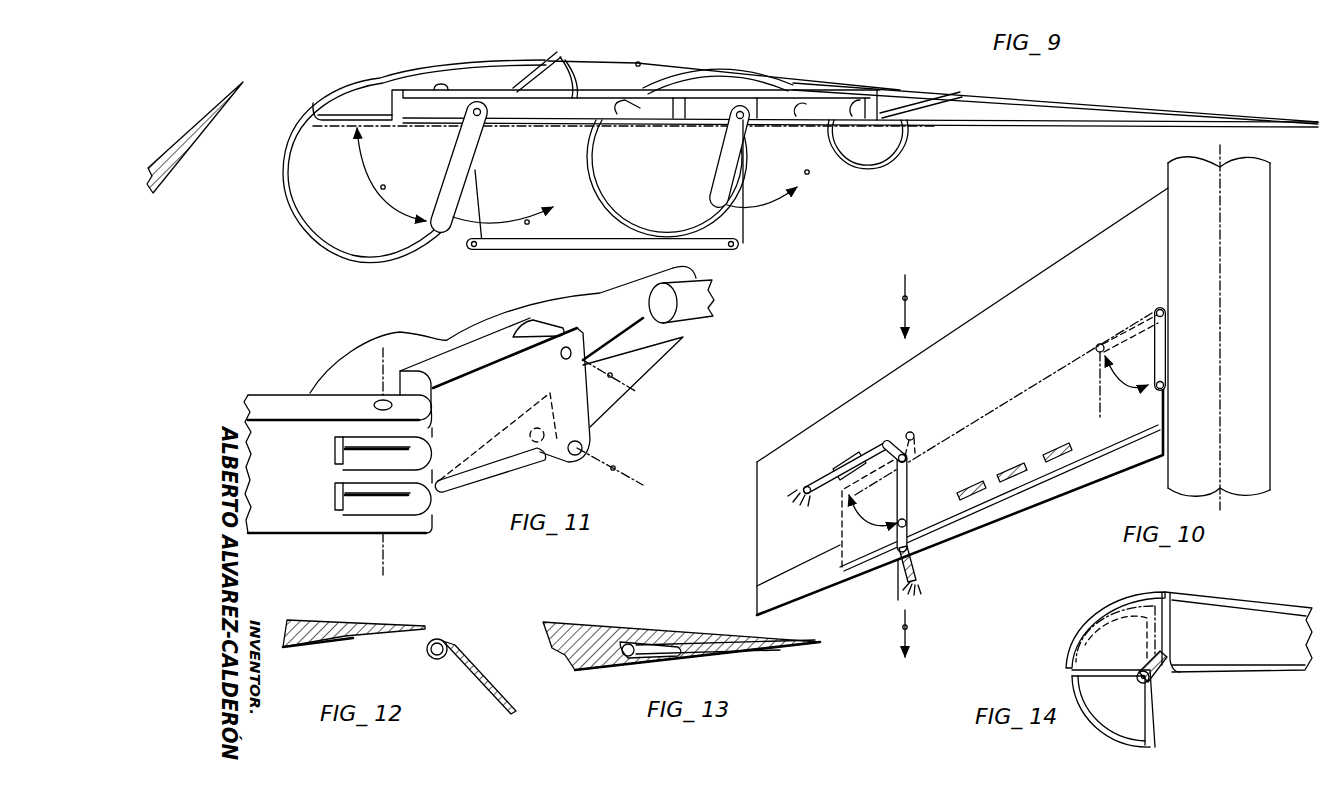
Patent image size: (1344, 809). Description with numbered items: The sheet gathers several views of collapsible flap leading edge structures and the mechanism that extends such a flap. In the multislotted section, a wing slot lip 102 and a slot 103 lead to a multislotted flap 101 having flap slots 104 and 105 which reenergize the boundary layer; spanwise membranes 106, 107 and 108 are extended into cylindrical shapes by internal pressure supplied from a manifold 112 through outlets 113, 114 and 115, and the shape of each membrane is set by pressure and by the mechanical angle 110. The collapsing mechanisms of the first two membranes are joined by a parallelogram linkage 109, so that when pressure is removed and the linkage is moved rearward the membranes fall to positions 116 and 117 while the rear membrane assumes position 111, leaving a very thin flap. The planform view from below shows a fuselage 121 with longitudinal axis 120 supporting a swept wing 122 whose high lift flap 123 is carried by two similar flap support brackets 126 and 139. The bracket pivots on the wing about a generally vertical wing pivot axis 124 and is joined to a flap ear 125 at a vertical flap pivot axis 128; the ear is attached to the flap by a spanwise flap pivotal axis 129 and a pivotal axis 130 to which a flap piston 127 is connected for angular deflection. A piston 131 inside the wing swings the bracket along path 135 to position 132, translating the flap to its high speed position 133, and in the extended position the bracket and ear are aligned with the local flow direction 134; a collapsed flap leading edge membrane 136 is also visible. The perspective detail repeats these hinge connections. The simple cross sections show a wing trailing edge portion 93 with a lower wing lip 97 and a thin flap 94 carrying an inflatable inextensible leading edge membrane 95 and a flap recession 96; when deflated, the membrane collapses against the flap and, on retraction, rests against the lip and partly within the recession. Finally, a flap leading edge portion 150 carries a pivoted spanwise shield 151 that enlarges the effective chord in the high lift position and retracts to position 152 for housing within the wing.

In FIG. 12, the wing trailing edge portion 93 is at (302, 620).
In FIG. 13, the wing trailing edge portion 93 is at (575, 670).
In FIG. 12, the thin flap 94 is at (467, 668).
In FIG. 13, the thin flap 94 is at (750, 651).
In FIG. 12, the leading edge membrane 95 is at (430, 657).
In FIG. 13, the leading edge membrane 95 is at (635, 654).
In FIG. 12, the flap recession 96 is at (452, 666).
In FIG. 13, the flap recession 96 is at (707, 653).
In FIG. 12, the lower wing lip 97 is at (353, 641).
In FIG. 13, the lower wing lip 97 is at (670, 658).
In FIG. 9, the multislotted flap 101 is at (468, 62).
In FIG. 9, the wing slot lip 102 is at (198, 118).
In FIG. 9, the slot 103 is at (260, 102).
In FIG. 9, the flap slot 104 is at (639, 62).
In FIG. 9, the lower flap slot 105 is at (835, 89).
In FIG. 9, the spanwise membrane 106 is at (303, 230).
In FIG. 9, the spanwise membrane 107 is at (603, 218).
In FIG. 9, the spanwise membrane 108 is at (889, 170).
In FIG. 9, the parallelogram linkage 109 is at (490, 257).
In FIG. 9, the angle 110 is at (383, 189).
In FIG. 9, the collapsed membrane position 111 is at (906, 147).
In FIG. 9, the manifold 112 is at (555, 56).
In FIG. 9, the outlet 113 is at (392, 113).
In FIG. 9, the outlet 114 is at (693, 106).
In FIG. 9, the outlet 115 is at (884, 104).
In FIG. 9, the collapsed membrane position 116 is at (568, 120).
In FIG. 9, the collapsed membrane position 117 is at (798, 110).
In FIG. 10, the longitudinal axis 120 is at (1220, 176).
In FIG. 10, the fuselage 121 is at (1173, 190).
In FIG. 10, the swept wing 122 is at (1005, 298).
In FIG. 10, the high lift flap 123 is at (1058, 512).
In FIG. 11, the high lift flap 123 is at (653, 360).
In FIG. 10, the wing pivot axis 124 is at (913, 458).
In FIG. 10, the flap ear 125 is at (915, 530).
In FIG. 11, the flap ear 125 is at (480, 463).
In FIG. 10, the flap support bracket 126 is at (907, 485).
In FIG. 11, the flap support bracket 126 is at (277, 408).
In FIG. 10, the flap piston 127 is at (920, 567).
In FIG. 11, the flap piston 127 is at (697, 317).
In FIG. 10, the flap pivot axis 128 is at (910, 523).
In FIG. 11, the flap pivot axis 128 is at (384, 557).
In FIG. 10, the spanwise flap pivotal axis 129 is at (1074, 460).
In FIG. 11, the spanwise flap pivotal axis 129 is at (616, 470).
In FIG. 10, the pivotal axis 130 is at (886, 567).
In FIG. 11, the pivotal axis 130 is at (612, 378).
In FIG. 10, the piston 131 is at (852, 465).
In FIG. 10, the retracted bracket position 132 is at (910, 432).
In FIG. 10, the high speed position 133 is at (1006, 408).
In FIG. 10, the local flow direction 134 is at (907, 297).
In FIG. 10, the path 135 is at (848, 517).
In FIG. 10, the collapsed flap leading edge membrane 136 is at (1027, 476).
In FIG. 11, the collapsed flap leading edge membrane 136 is at (460, 493).
In FIG. 10, the flap bracket 139 is at (1163, 363).
In FIG. 14, the flap leading edge portion 150 is at (1242, 598).
In FIG. 14, the pivoted spanwise shield 151 is at (1156, 718).
In FIG. 14, the retracted shield position 152 is at (1152, 637).